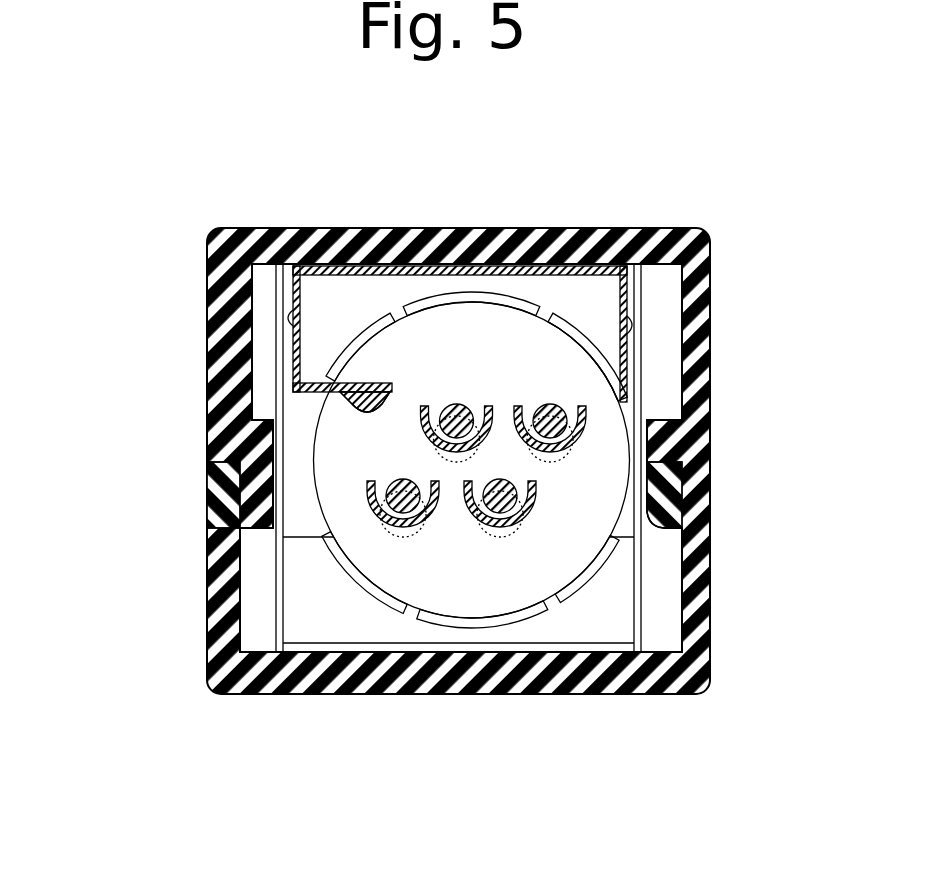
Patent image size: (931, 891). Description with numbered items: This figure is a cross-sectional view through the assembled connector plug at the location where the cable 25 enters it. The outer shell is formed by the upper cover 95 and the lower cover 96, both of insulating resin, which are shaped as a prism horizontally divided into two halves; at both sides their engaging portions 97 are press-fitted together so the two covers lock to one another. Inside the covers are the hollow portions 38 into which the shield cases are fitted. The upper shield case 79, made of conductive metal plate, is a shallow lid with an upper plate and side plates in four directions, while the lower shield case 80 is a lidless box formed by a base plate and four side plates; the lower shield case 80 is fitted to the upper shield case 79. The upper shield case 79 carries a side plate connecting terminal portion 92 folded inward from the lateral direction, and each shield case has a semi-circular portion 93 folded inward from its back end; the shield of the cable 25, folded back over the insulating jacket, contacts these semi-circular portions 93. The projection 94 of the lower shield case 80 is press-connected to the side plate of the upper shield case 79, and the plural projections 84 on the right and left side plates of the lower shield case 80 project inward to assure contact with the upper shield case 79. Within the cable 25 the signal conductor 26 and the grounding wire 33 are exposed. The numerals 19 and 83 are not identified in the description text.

The cable 25 is at (598, 228).
The lower cover 96 is at (558, 693).
The engaging portions 97 is at (207, 474).
The hollow portions 38 is at (670, 380).
The lower shield case 80 is at (643, 607).
The upper shield case 79 is at (322, 228).
The projection 94 is at (285, 318).
The upper cover 95 is at (530, 343).
The semi-circular portion 93 is at (470, 302).
The side plate connecting terminal portion 92 is at (365, 385).
The grounding wire 33 is at (348, 417).
The terminal 19 is at (508, 427).
The signal conductor 26 is at (466, 408).
The terminal cavity 83 is at (424, 524).
The projections 84 is at (517, 524).